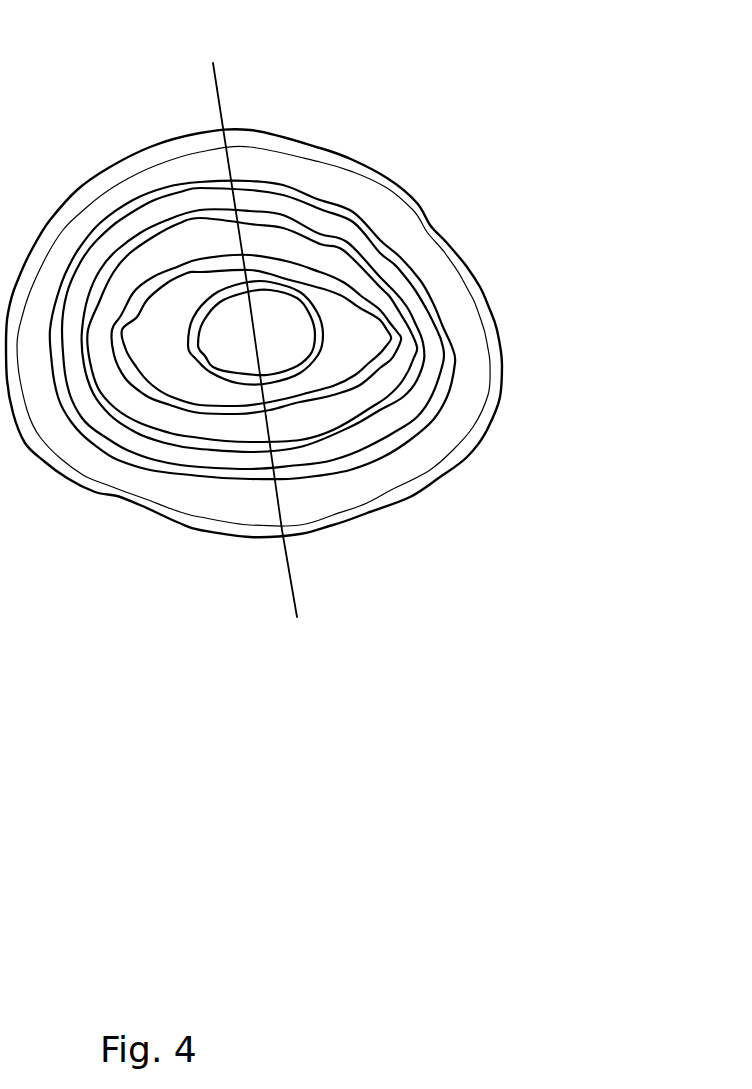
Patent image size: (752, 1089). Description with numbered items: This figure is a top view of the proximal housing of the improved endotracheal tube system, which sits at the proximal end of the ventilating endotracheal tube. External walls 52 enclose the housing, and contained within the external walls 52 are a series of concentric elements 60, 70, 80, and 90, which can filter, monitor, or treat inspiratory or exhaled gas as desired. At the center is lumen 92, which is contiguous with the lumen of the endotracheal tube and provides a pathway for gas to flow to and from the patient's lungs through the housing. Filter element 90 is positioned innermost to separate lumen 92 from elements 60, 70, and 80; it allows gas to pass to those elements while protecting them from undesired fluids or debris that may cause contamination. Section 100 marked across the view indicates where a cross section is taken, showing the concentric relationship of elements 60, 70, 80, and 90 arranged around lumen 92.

The external walls 52 is at (503, 366).
The element 60 is at (453, 340).
The element 70 is at (418, 306).
The element 80 is at (368, 298).
The filter element 90 is at (303, 293).
The lumen 92 is at (283, 348).
The section 100 is at (213, 63).